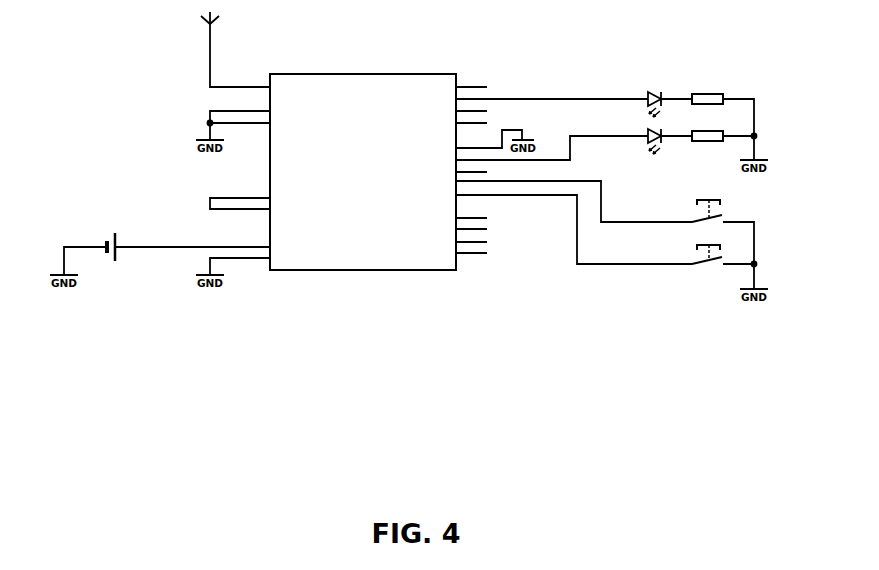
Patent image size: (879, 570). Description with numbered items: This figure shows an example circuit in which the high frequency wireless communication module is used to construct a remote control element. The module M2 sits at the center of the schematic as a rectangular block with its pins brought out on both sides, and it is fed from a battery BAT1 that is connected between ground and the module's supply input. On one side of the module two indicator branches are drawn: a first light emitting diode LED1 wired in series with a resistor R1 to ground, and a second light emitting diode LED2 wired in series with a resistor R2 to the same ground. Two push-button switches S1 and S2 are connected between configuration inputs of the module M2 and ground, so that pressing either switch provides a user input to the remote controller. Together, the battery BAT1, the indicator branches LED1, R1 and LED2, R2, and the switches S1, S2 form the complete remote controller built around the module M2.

The transceiver module TR-XXX-01 M2 is at (365, 174).
The battery BAT1 is at (96, 247).
The light emitting diode 1 LED1 is at (637, 102).
The light emitting diode 2 LED2 is at (637, 139).
The resistor 1 R1 is at (707, 92).
The resistor 2 R2 is at (707, 129).
The switch 1 S1 is at (703, 211).
The switch 2 S2 is at (703, 253).